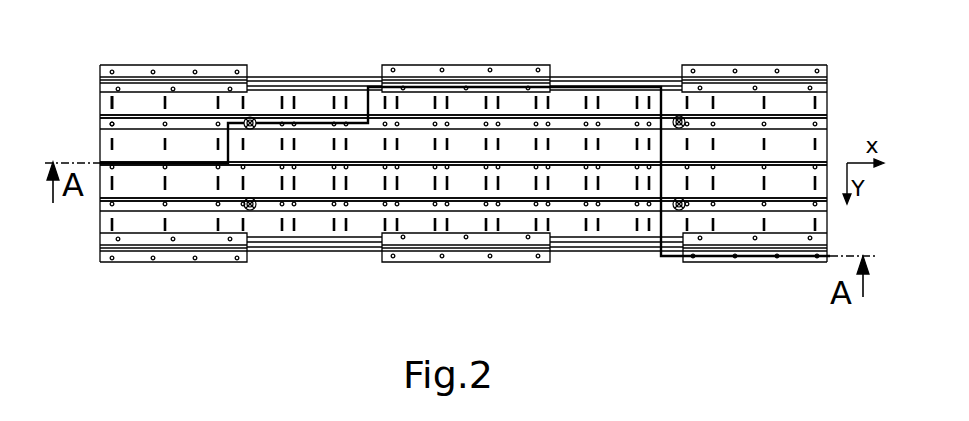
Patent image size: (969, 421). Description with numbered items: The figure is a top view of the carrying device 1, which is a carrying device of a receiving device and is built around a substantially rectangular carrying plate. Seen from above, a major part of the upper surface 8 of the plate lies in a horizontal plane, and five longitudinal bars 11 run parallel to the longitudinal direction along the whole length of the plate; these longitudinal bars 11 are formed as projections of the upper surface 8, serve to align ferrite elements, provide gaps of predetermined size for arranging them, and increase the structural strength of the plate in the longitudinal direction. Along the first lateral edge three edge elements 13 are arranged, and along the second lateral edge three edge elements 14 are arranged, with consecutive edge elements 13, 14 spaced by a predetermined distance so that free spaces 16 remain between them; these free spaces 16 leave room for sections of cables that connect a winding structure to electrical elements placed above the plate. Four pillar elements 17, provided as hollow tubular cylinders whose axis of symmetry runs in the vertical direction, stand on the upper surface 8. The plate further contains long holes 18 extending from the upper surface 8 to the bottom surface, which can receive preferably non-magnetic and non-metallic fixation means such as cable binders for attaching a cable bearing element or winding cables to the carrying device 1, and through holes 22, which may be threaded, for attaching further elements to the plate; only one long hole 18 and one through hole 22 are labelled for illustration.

The carrying device 1 is at (171, 327).
The upper surface 8 is at (565, 100).
The longitudinal bars 11 is at (820, 115).
The edge elements 13 is at (217, 262).
The edge elements 14 is at (138, 68).
The free spaces 16 is at (315, 76).
The pillar elements 17 is at (251, 117).
The long holes 18 is at (109, 107).
The through holes 22 is at (110, 123).